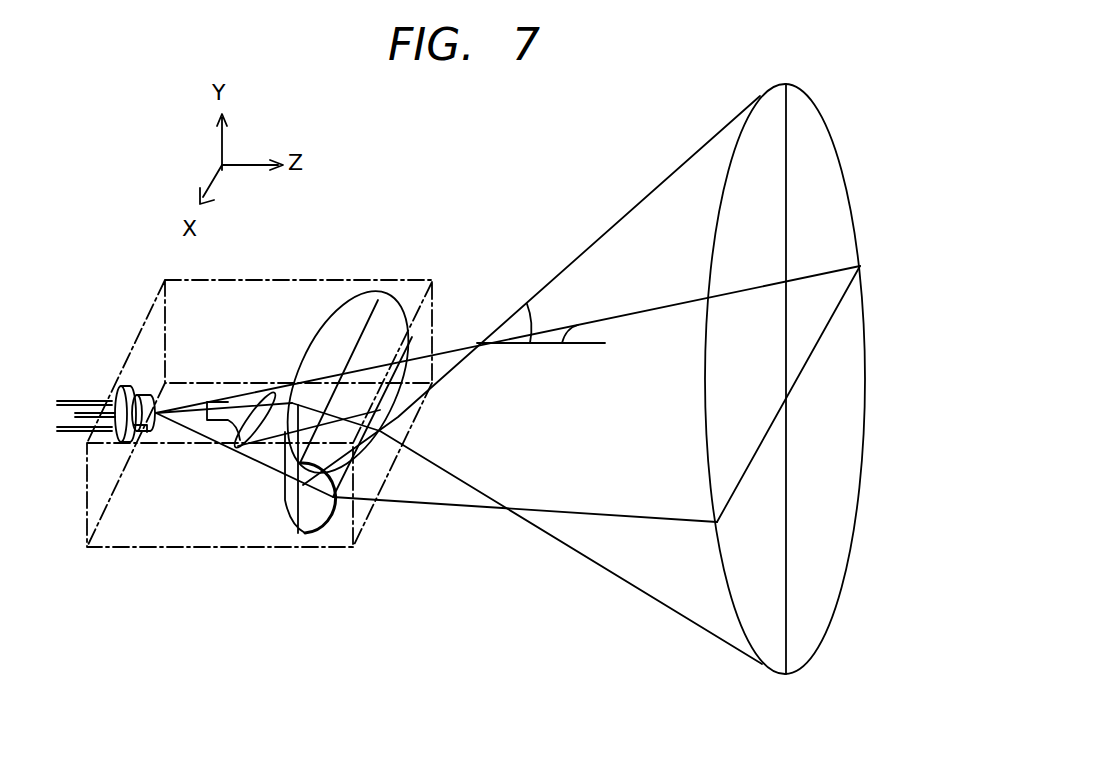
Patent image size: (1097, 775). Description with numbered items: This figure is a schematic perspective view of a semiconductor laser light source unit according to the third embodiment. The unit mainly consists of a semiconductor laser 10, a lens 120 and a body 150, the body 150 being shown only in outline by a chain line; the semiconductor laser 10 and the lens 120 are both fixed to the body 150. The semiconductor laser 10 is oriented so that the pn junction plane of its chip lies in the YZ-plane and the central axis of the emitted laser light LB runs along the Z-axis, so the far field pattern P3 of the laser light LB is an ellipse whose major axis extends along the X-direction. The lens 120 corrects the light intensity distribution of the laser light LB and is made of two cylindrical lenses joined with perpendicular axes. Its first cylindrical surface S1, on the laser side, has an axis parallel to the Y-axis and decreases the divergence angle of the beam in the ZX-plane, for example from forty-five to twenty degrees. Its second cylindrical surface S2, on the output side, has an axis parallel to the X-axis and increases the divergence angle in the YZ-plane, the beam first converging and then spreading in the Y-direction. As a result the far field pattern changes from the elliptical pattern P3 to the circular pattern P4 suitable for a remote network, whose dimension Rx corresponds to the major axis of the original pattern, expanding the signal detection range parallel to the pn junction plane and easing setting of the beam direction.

The semiconductor laser 10 is at (130, 438).
The laser light LB is at (178, 445).
The lens 120 is at (348, 420).
The body 150 is at (367, 525).
The far field pattern P3 is at (240, 450).
The circular pattern P4 is at (775, 388).
The first cylindrical surface S1 is at (292, 512).
The second cylindrical surface S2 is at (388, 316).
The major-axis of circular pattern Rx is at (827, 322).